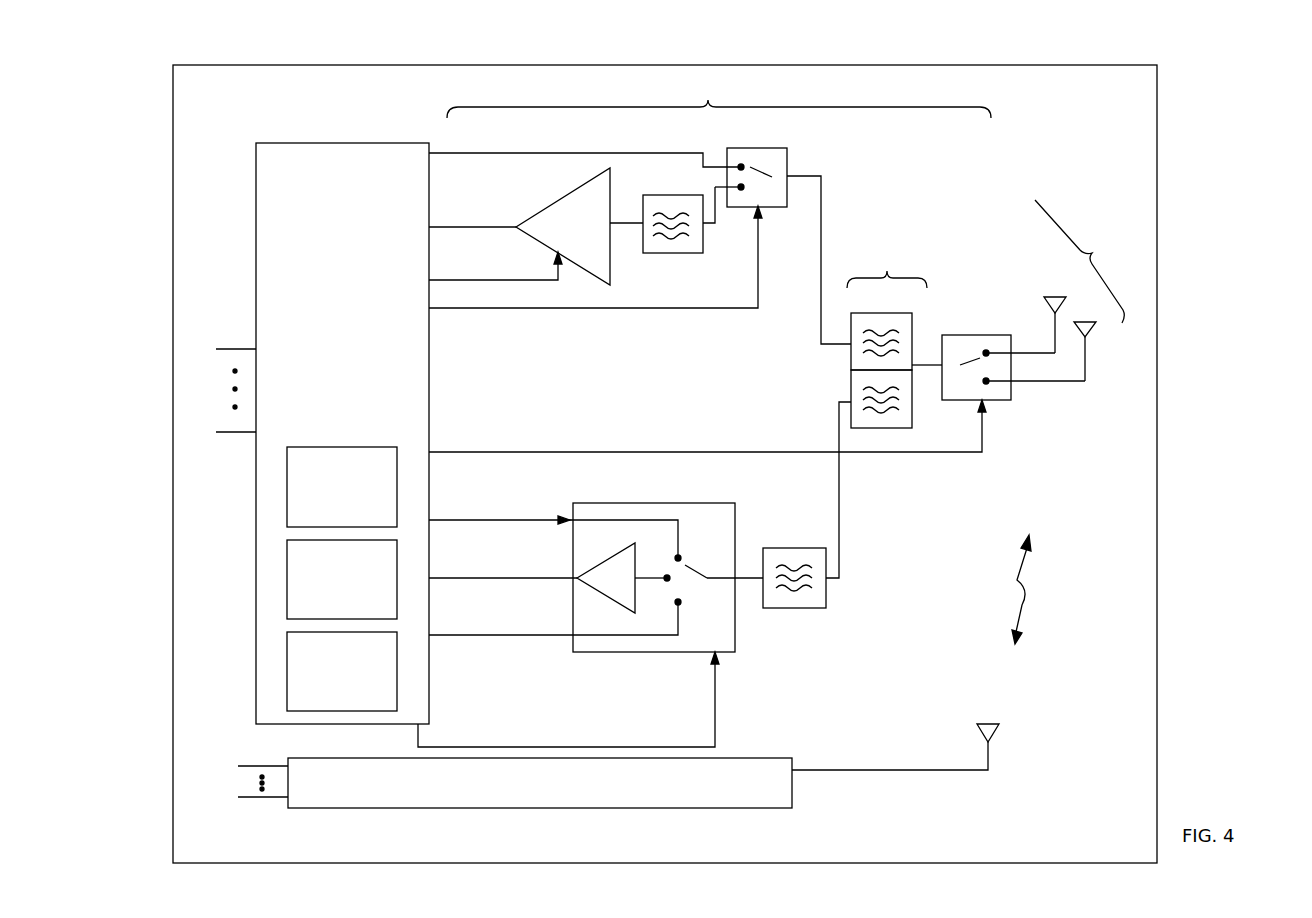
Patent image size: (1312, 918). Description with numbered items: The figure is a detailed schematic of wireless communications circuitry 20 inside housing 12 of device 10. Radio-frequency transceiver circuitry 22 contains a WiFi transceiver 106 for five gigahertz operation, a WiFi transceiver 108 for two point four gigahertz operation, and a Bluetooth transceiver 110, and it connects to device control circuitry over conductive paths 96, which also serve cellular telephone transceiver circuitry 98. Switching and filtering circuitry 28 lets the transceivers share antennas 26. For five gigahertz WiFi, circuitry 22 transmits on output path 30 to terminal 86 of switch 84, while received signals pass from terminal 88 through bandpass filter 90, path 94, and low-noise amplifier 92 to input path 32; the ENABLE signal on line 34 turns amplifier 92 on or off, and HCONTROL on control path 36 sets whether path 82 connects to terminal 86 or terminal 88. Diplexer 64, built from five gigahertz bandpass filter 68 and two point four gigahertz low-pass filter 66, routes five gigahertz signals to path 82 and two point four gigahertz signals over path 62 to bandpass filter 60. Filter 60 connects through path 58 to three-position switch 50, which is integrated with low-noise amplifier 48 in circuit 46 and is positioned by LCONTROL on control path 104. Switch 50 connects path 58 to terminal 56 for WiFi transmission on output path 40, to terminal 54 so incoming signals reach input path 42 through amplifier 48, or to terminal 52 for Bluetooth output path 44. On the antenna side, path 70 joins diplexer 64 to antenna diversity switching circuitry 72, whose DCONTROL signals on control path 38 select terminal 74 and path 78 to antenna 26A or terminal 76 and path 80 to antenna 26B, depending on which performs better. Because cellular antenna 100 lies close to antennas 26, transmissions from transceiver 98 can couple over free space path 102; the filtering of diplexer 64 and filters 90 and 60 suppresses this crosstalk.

The device 10 is at (695, 24).
The housing 12 is at (553, 65).
The wireless communications circuitry 20 is at (925, 824).
The radio-frequency transceiver circuitry 22 is at (355, 143).
The antennas 26 is at (1079, 261).
The first antenna 26A is at (1049, 306).
The second antenna 26B is at (1090, 340).
The switching and filtering circuitry 28 is at (719, 98).
The output path 30 is at (520, 153).
The 5 GHz input path 32 is at (437, 225).
The line 34 is at (548, 283).
The control path 36 is at (497, 309).
The control path 38 is at (490, 452).
The output path 40 is at (563, 519).
The 2.4 GHz input path 42 is at (558, 582).
The Bluetooth output path 44 is at (484, 638).
The circuit 46 is at (620, 652).
The low-noise amplifier 48 is at (606, 600).
The switch 50 is at (697, 592).
The terminal 52 is at (676, 602).
The terminal 54 is at (667, 576).
The terminal 56 is at (680, 556).
The path 58 is at (752, 576).
The filter 60 is at (800, 608).
The path 62 is at (839, 525).
The diplexer 64 is at (887, 264).
The filter 66 is at (887, 428).
The filter 68 is at (870, 313).
The path 70 is at (928, 364).
The switching circuitry 72 is at (1005, 400).
The terminal 74 is at (986, 350).
The terminal 76 is at (988, 383).
The path 78 is at (1035, 352).
The path 80 is at (1035, 381).
The path 82 is at (821, 226).
The switch 84 is at (775, 148).
The terminal 86 is at (741, 165).
The terminal 88 is at (741, 190).
The bandpass filter 90 is at (653, 195).
The low-noise amplifier 92 is at (610, 200).
The path 94 is at (620, 226).
The conductive paths 96 is at (232, 348).
The cellular telephone transceiver circuitry 98 is at (792, 788).
The antenna 100 is at (998, 730).
The free space path 102 is at (1016, 578).
The control path 104 is at (715, 705).
The transceiver 106 is at (287, 500).
The transceiver 108 is at (287, 580).
The transceiver 110 is at (287, 660).